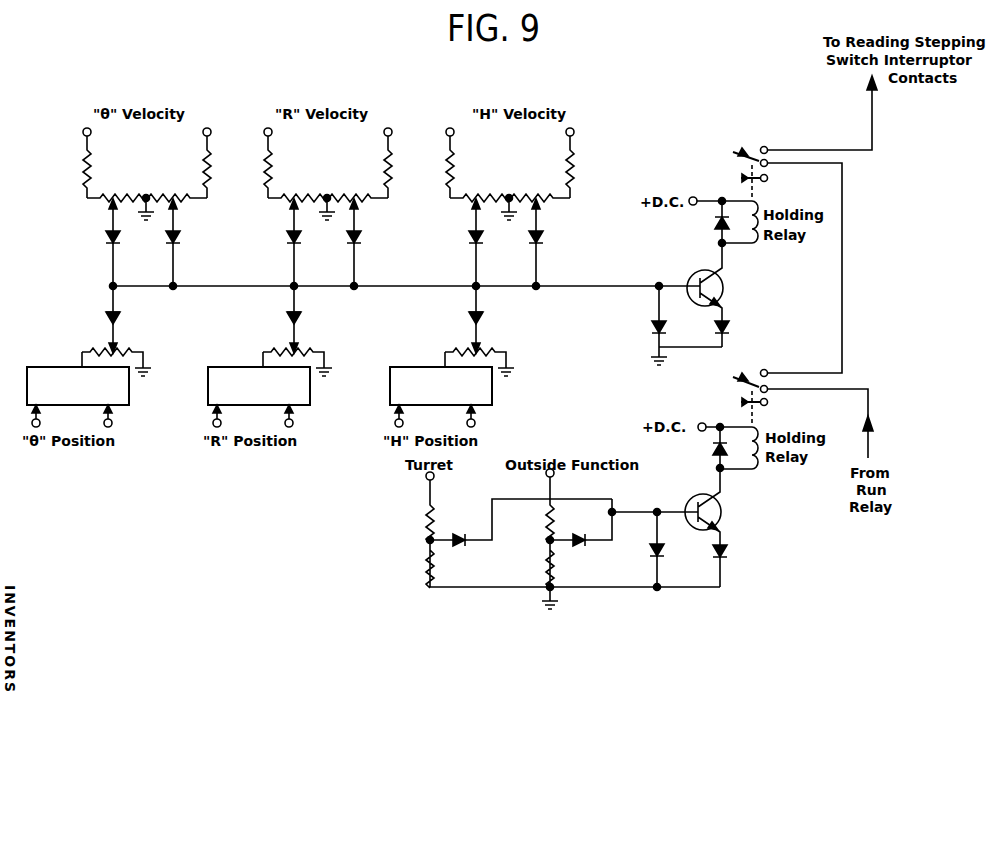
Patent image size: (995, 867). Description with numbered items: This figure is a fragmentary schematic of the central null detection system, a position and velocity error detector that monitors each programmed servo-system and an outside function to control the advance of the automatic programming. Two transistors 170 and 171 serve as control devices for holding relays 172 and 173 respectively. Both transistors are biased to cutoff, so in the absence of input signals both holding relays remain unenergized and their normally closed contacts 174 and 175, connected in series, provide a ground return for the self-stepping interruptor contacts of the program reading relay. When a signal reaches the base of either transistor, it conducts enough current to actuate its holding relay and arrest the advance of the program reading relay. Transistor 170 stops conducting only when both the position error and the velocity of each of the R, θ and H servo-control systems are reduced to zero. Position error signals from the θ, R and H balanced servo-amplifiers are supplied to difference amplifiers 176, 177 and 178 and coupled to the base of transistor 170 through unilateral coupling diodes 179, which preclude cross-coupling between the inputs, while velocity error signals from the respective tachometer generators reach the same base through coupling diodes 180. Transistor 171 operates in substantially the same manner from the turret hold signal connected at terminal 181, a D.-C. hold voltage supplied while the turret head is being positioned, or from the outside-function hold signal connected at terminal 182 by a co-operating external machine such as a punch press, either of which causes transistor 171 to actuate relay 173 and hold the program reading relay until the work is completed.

The transistor 170 is at (723, 290).
The transistor 171 is at (723, 514).
The holding relay 172 is at (810, 194).
The holding relay 173 is at (813, 416).
The normally closed contacts 174 is at (754, 154).
The normally closed contacts 175 is at (756, 377).
The difference amplifier 176 is at (129, 392).
The difference amplifier 177 is at (310, 392).
The difference amplifier 178 is at (492, 392).
The unilateral coupling diodes 179 is at (510, 322).
The coupling diodes 180 is at (282, 238).
The terminal 181 is at (422, 479).
The terminal 182 is at (556, 478).